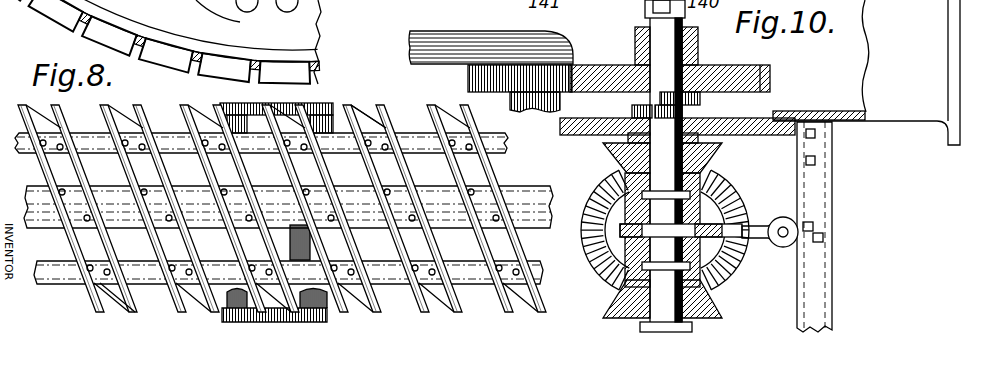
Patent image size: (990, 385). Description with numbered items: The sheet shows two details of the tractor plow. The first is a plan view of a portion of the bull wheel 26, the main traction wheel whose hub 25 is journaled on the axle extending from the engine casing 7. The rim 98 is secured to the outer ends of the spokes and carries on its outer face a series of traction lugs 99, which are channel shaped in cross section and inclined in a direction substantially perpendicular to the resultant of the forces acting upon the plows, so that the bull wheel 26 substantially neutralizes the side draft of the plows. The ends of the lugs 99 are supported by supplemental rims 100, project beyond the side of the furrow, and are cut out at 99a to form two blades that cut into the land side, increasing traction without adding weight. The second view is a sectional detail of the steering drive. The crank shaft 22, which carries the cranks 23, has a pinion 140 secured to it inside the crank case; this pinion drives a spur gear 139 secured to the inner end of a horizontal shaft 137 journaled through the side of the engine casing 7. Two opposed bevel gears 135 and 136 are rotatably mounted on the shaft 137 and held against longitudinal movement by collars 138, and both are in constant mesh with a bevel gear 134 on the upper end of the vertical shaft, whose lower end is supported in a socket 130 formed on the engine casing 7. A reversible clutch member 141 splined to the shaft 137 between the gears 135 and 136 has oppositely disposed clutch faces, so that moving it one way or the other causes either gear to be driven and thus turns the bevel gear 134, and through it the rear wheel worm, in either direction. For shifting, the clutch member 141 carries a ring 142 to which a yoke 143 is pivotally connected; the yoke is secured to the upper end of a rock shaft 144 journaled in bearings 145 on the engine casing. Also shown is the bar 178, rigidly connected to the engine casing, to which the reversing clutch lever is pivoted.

In FIG. 8, the supplemental rim 100 is at (84, 145).
In FIG. 8, the rim 98 is at (515, 195).
In FIG. 8, the traction lug 99 is at (490, 242).
In FIG. 8, the cut out 99a is at (186, 316).
In FIG. 8, the hub 25 is at (328, 108).
In FIG. 8, the bull wheel 26 is at (179, 108).
In FIG. 10, the crank 23 is at (452, 44).
In FIG. 10, the pinion 140 is at (478, 80).
In FIG. 10, the crank shaft 22 is at (560, 103).
In FIG. 10, the spur gear 139 is at (770, 79).
In FIG. 10, the socket 130 is at (643, 9).
In FIG. 10, the engine casing 7 is at (757, 134).
In FIG. 10, the horizontal shaft 137 is at (657, 148).
In FIG. 10, the bevel gear 136 is at (717, 150).
In FIG. 10, the bevel gear 135 is at (723, 313).
In FIG. 10, the collar 138 is at (642, 327).
In FIG. 10, the ring 142 is at (598, 237).
In FIG. 10, the reversible clutch member 141 is at (707, 257).
In FIG. 10, the bevel gear 134 is at (735, 196).
In FIG. 10, the yoke 143 is at (755, 238).
In FIG. 10, the rock shaft 144 is at (786, 228).
In FIG. 10, the bearing 145 is at (813, 237).
In FIG. 10, the bar 178 is at (817, 301).